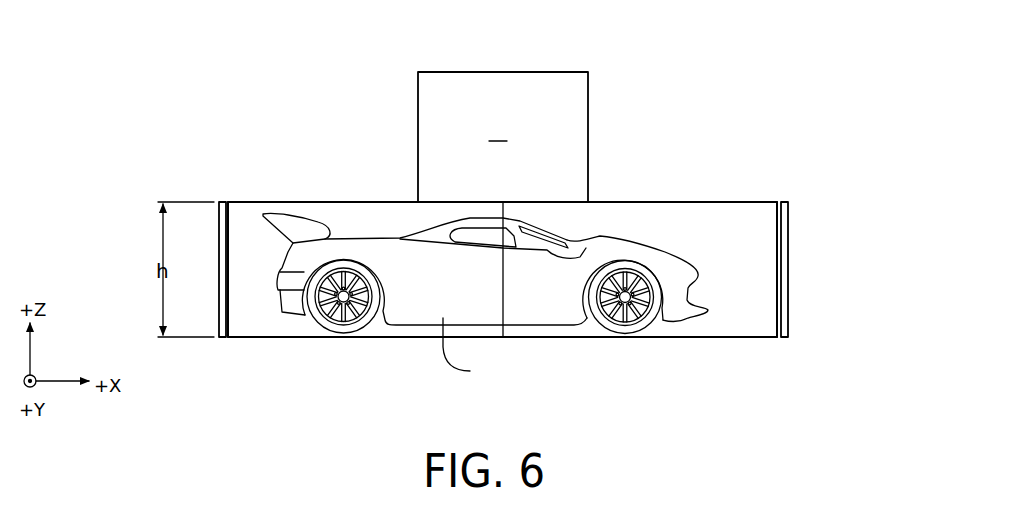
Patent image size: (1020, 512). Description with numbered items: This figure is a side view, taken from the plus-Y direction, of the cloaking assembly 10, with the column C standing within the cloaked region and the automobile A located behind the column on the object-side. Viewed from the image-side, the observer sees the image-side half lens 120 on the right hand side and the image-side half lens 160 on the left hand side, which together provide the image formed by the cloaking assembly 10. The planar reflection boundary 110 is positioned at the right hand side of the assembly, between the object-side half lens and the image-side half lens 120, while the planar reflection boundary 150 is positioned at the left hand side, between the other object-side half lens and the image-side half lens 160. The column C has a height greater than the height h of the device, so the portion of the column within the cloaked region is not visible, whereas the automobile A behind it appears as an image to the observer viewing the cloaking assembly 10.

The cloaking assembly 10 is at (525, 234).
The planar reflection boundary 110 is at (792, 207).
The image-side half lens 120 is at (747, 342).
The planar reflection boundary 150 is at (219, 200).
The image-side half lens 160 is at (260, 341).